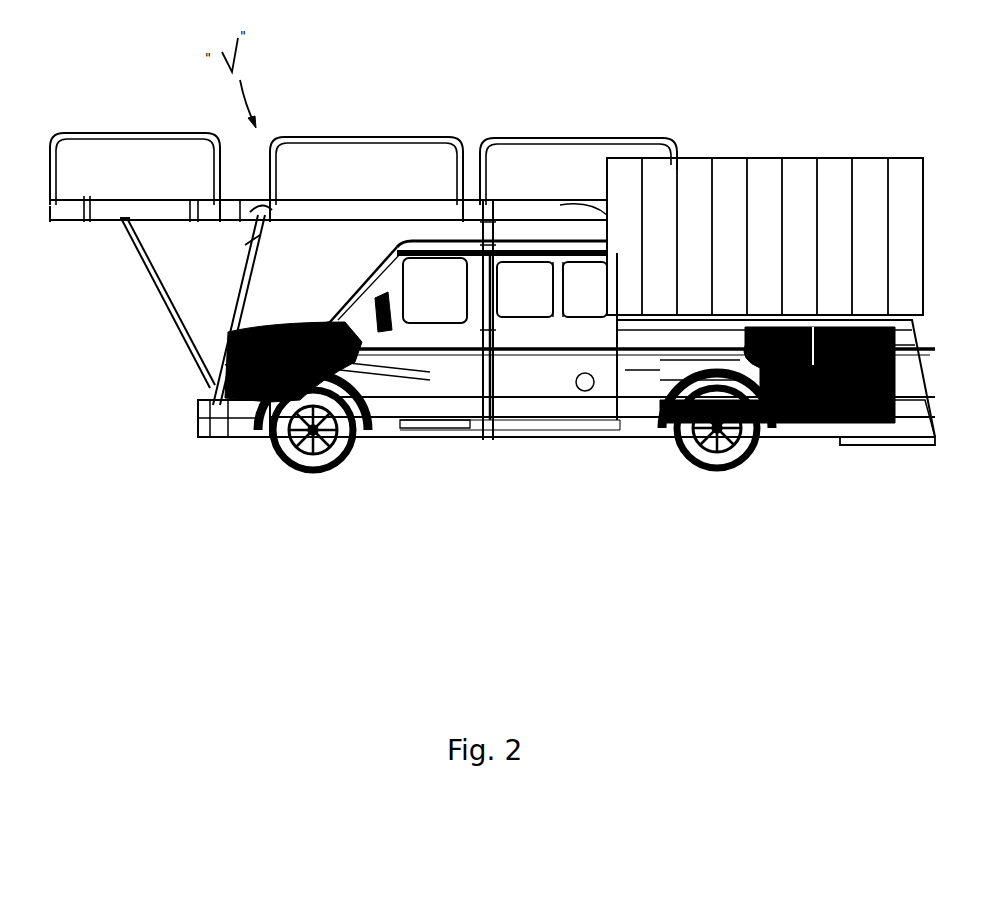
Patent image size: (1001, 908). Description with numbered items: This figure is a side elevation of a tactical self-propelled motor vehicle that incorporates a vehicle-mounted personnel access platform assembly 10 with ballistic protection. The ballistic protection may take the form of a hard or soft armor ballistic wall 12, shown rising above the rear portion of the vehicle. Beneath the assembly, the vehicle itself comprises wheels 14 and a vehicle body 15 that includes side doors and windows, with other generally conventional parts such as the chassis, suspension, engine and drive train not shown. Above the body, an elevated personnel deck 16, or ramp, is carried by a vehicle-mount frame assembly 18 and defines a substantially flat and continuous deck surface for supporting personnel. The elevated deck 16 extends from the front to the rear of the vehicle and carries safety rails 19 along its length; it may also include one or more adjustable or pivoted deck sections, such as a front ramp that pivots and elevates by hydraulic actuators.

The platform assembly 10 is at (782, 145).
The ballistic wall 12 is at (848, 182).
The wheels 14 is at (283, 465).
The vehicle body 15 is at (330, 308).
The elevated personnel deck 16 is at (355, 195).
The vehicle-mount frame assembly 18 is at (160, 300).
The safety rails 19 is at (490, 200).